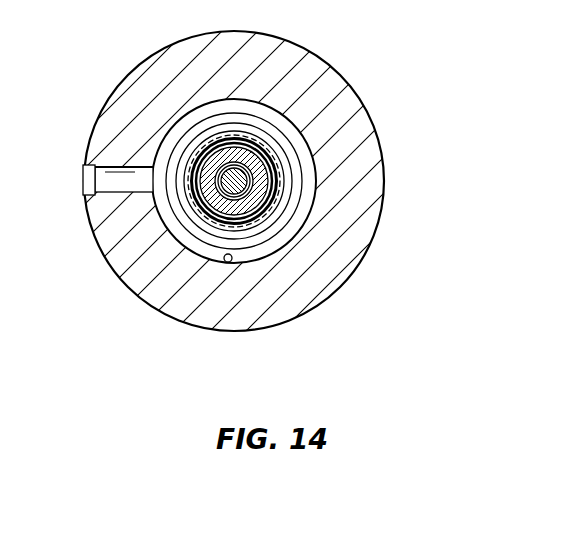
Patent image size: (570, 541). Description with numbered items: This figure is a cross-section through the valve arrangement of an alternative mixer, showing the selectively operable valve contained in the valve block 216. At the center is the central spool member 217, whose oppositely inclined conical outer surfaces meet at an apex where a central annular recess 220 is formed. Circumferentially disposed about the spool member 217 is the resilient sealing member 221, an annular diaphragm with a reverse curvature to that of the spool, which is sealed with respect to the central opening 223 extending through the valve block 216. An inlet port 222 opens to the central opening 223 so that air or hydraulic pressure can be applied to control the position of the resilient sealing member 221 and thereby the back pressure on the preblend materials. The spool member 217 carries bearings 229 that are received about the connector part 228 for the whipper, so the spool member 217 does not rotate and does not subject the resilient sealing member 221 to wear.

The valve block 216 is at (134, 289).
The central spool member 217 is at (264, 196).
The central annular recess 220 is at (258, 170).
The resilient sealing member 221 is at (248, 222).
The inlet port 222 is at (95, 183).
The central opening 223 is at (227, 262).
The connector part 228 is at (262, 188).
The bearings 229 is at (240, 166).